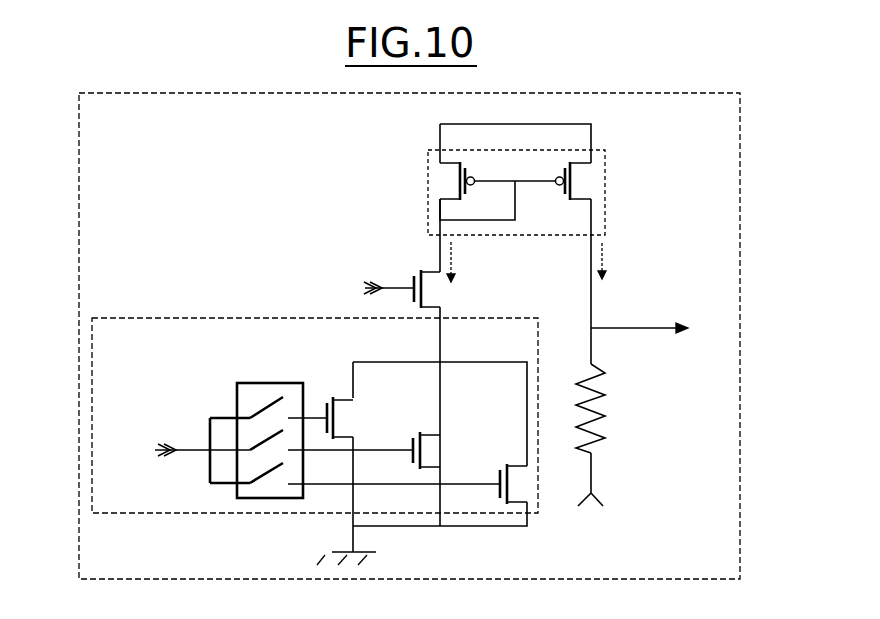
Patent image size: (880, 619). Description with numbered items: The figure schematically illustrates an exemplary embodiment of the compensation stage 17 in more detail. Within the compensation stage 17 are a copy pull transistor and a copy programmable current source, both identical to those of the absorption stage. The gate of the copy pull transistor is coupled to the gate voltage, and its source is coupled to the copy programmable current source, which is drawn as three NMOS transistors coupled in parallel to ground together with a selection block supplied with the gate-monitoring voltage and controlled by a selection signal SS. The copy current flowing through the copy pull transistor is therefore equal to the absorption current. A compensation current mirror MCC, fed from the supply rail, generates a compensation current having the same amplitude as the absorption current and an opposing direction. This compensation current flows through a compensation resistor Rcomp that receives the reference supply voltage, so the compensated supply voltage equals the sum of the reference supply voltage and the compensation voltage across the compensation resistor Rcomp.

The compensation stage 17 is at (79, 340).
The compensation current mirror MCC is at (428, 187).
The compensation resistor Rcomp is at (626, 408).
The selection signal SS is at (268, 378).